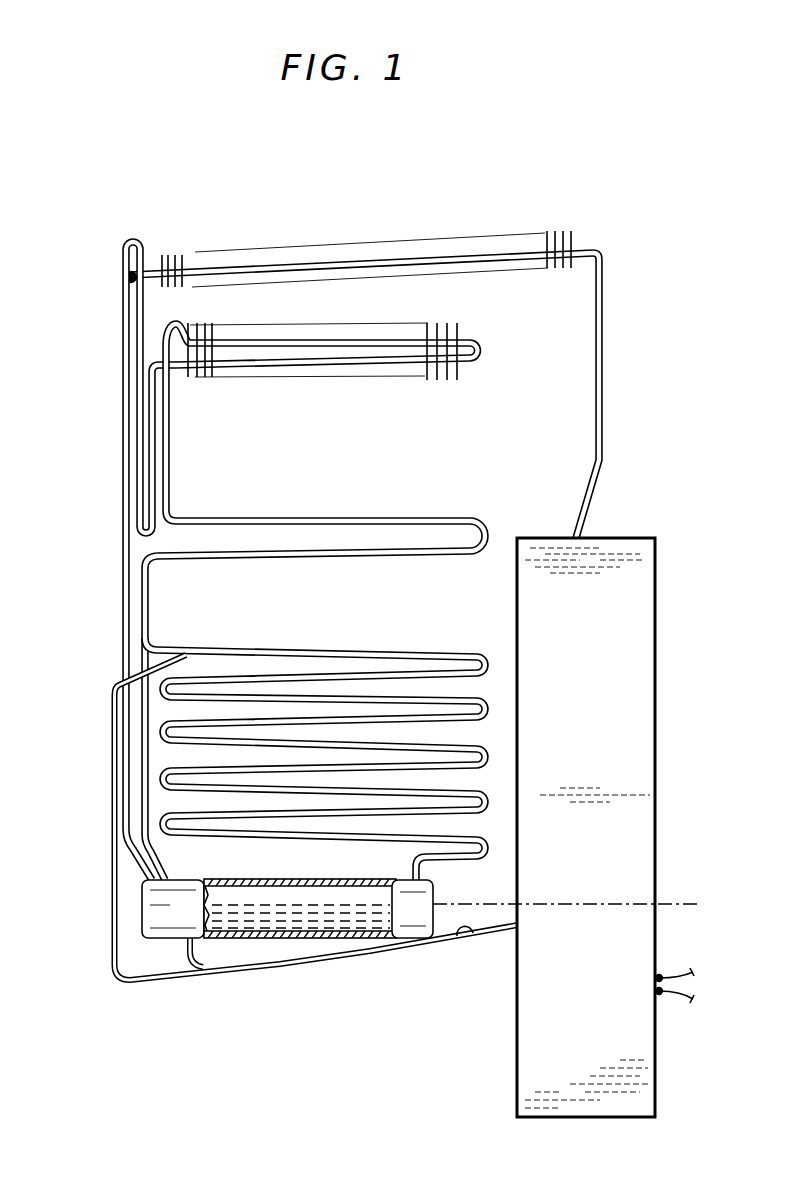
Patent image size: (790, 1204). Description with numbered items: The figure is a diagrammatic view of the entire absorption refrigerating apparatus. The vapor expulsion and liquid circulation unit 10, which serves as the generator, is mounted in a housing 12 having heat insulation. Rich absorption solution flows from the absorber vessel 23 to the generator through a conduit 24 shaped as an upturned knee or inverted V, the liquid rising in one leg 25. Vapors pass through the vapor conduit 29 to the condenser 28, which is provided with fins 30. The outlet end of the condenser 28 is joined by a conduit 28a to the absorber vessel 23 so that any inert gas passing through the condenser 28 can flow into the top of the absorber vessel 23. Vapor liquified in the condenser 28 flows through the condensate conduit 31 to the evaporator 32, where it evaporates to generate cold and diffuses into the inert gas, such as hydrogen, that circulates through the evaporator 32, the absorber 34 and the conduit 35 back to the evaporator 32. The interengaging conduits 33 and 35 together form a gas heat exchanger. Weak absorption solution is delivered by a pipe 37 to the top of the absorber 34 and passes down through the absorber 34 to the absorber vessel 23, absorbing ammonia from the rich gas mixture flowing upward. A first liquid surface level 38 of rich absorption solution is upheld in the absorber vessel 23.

The vapor expulsion and liquid circulation unit 10 is at (686, 658).
The housing 12 is at (657, 770).
The absorber vessel 23 is at (331, 940).
The conduit 24 is at (200, 950).
The leg 25 is at (467, 942).
The condenser 28 is at (403, 254).
The conduit 28a is at (121, 398).
The vapor conduit 29 is at (606, 378).
The fins 30 is at (577, 240).
The condensate conduit 31 is at (137, 452).
The evaporator 32 is at (362, 348).
The conduit 33 is at (350, 518).
The absorber 34 is at (430, 655).
The conduit 35 is at (460, 518).
The pipe 37 is at (110, 918).
The first liquid surface level 38 is at (699, 905).